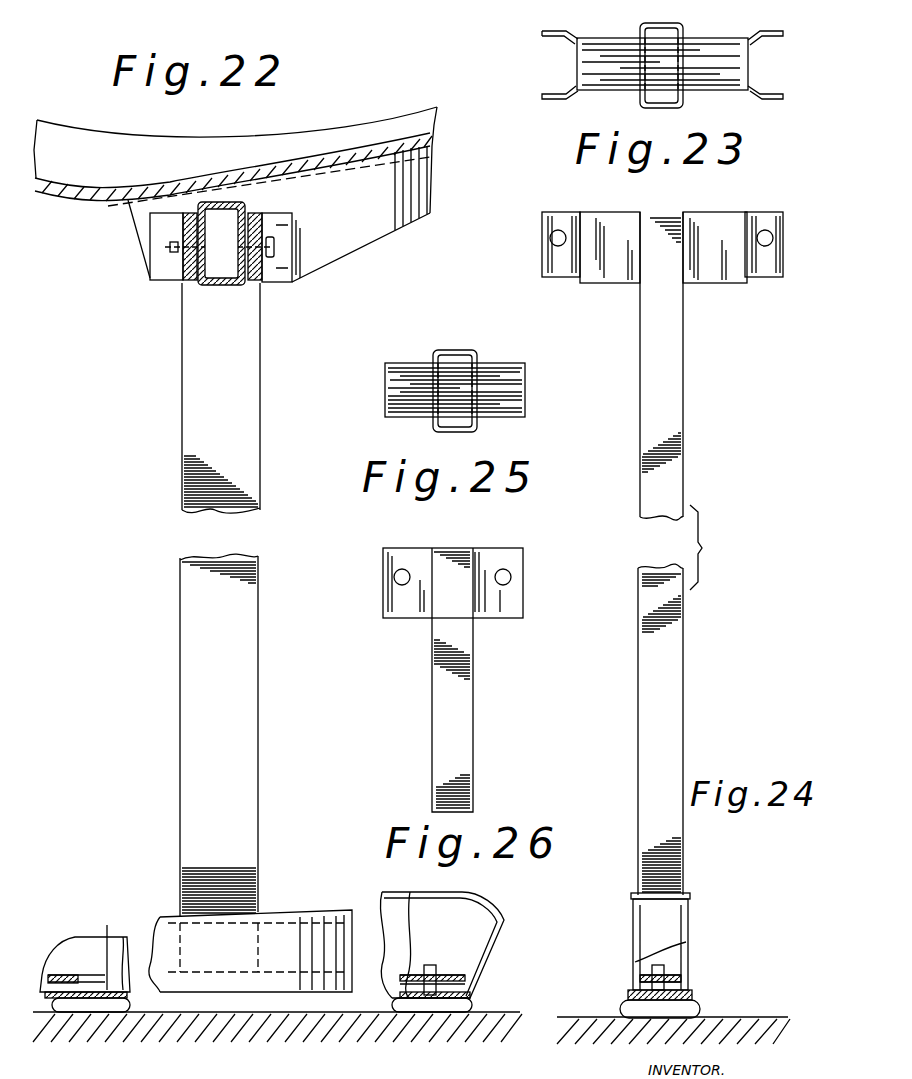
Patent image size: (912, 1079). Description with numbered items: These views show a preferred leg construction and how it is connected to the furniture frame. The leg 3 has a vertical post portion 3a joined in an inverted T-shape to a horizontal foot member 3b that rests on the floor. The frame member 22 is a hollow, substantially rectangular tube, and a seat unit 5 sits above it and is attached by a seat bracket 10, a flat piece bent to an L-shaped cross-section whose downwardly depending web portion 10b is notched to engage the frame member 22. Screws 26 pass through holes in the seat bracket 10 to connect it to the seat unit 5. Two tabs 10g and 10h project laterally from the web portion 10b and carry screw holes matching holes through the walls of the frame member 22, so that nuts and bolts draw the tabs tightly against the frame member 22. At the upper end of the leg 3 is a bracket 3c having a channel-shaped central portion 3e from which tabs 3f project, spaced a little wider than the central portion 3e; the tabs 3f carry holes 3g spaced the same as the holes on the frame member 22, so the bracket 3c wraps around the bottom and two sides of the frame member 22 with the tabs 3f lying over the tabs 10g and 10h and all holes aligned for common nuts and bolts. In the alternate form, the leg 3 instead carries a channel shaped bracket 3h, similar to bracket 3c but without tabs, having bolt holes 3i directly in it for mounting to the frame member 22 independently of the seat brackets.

In FIG. 22, the leg 3 is at (240, 412).
In FIG. 23, the leg 3 is at (662, 64).
In FIG. 24, the leg 3 is at (668, 398).
In FIG. 25, the leg 3 is at (455, 390).
In FIG. 22, the vertical post portion 3a is at (255, 742).
In FIG. 23, the vertical post portion 3a is at (683, 35).
In FIG. 24, the vertical post portion 3a is at (672, 704).
In FIG. 25, the vertical post portion 3a is at (455, 352).
In FIG. 26, the vertical post portion 3a is at (455, 738).
In FIG. 22, the horizontal foot member 3b is at (85, 945).
In FIG. 24, the horizontal foot member 3b is at (675, 933).
In FIG. 24, the bracket 3c is at (601, 225).
In FIG. 24, the channel-shaped central portion 3e is at (728, 222).
In FIG. 22, the tabs 3f is at (187, 232).
In FIG. 23, the tabs 3f is at (560, 31).
In FIG. 24, the tabs 3f is at (562, 268).
In FIG. 24, the holes 3g is at (556, 238).
In FIG. 26, the channel shaped bracket 3h is at (492, 556).
In FIG. 26, the bolt holes 3i is at (405, 572).
In FIG. 22, the seat unit 5 is at (246, 142).
In FIG. 22, the seat bracket 10 is at (247, 205).
In FIG. 22, the downwardly depending web portion 10b is at (368, 232).
In FIG. 22, the tab 10g is at (196, 218).
In FIG. 22, the tab 10h is at (253, 275).
In FIG. 22, the frame member 22 is at (218, 286).
In FIG. 22, the screws 26 is at (124, 206).